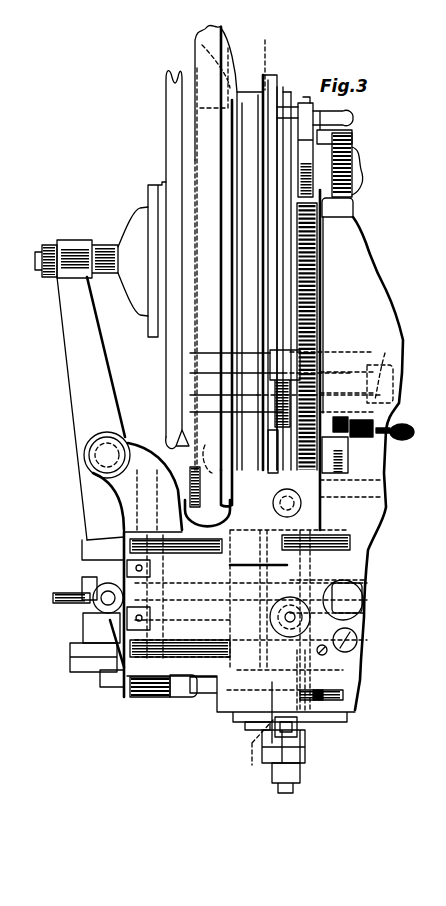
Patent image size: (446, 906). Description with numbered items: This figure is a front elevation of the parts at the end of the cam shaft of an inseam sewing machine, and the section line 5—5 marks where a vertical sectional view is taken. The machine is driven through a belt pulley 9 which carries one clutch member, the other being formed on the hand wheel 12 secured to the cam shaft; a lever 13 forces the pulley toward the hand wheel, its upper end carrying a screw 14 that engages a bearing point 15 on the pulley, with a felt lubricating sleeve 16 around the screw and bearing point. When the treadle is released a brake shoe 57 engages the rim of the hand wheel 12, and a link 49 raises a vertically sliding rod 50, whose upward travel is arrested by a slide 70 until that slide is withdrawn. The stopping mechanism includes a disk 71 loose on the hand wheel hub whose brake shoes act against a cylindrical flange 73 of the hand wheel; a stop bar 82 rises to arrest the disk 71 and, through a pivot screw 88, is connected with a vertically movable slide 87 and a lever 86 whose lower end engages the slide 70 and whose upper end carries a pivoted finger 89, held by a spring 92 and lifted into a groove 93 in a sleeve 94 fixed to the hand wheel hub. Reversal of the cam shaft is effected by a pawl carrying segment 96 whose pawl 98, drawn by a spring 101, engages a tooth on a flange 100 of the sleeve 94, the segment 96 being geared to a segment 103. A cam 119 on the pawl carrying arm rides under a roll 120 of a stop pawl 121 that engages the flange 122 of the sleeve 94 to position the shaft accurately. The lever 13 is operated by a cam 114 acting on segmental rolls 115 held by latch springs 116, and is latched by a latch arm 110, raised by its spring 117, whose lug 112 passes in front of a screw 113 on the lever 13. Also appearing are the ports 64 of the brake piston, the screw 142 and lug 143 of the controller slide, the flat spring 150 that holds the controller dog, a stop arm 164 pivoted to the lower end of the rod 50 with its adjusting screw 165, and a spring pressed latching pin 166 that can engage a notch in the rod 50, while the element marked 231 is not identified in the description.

The section line 5 is at (258, 56).
The belt pulley 9 is at (166, 95).
The hand wheel 12 is at (205, 36).
The lever 13 is at (73, 321).
The screw 14 is at (49, 279).
The bearing point 15 is at (112, 248).
The felt lubricating sleeve 16 is at (98, 277).
The link 49 is at (283, 783).
The vertically sliding rod 50 is at (307, 730).
The brake shoe 57 is at (133, 481).
The ports 64 is at (87, 615).
The slide 70 is at (277, 515).
The disk 71 is at (243, 92).
The cylindrical flange 73 is at (200, 108).
The stop bar 82 is at (247, 601).
The lever 86 is at (190, 412).
The vertically movable slide 87 is at (231, 313).
The pivot screw 88 is at (348, 473).
The pivoted finger 89 is at (203, 372).
The spring 92 is at (269, 403).
The groove 93 is at (287, 177).
The sleeve 94 is at (287, 203).
The pawl carrying segment 96 is at (298, 263).
The pawl 98 is at (300, 104).
The flange 100 is at (280, 223).
The spring 101 is at (335, 177).
The segment 103 is at (369, 361).
The latch arm 110 is at (123, 693).
The projecting lug 112 is at (112, 688).
The screw 113 is at (97, 673).
The cam 114 is at (113, 567).
The segmental rolls 115 is at (93, 587).
The latch springs 116 is at (58, 590).
The spring 117 is at (158, 697).
The cam 119 is at (350, 117).
The roll 120 is at (309, 98).
The stop pawl 121 is at (280, 100).
The flange 122 is at (296, 294).
The screw 142 is at (345, 655).
The lug 143 is at (363, 655).
The flat spring 150 is at (365, 615).
The stop arm 164 is at (312, 778).
The adjusting screw 165 is at (310, 740).
The spring pressed latching pin 166 is at (285, 625).
The rack stop 231 is at (298, 245).